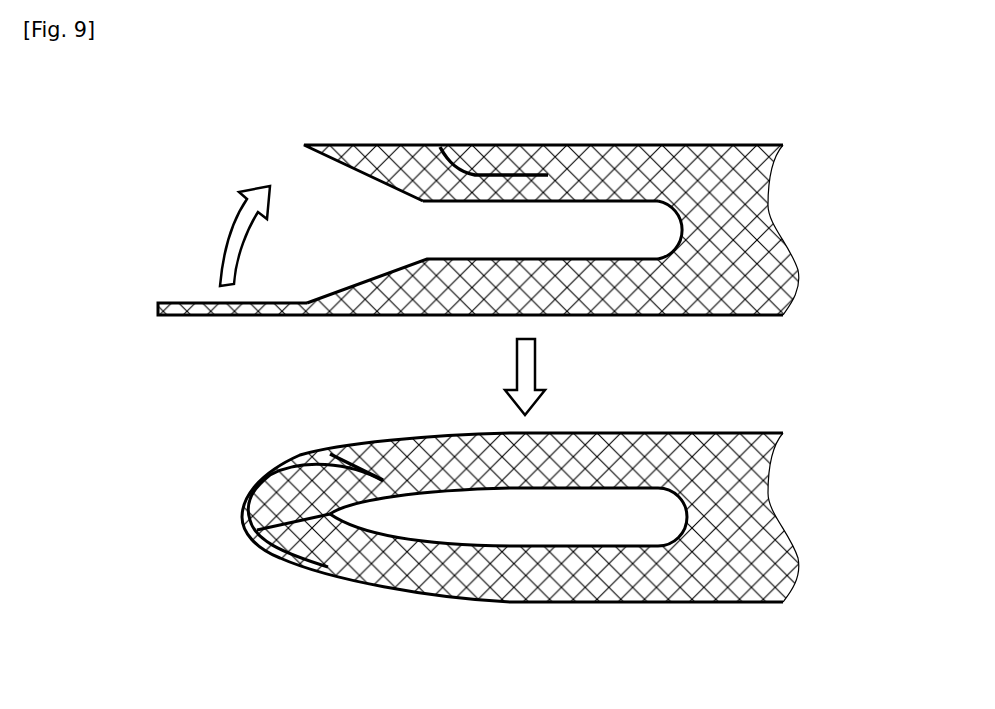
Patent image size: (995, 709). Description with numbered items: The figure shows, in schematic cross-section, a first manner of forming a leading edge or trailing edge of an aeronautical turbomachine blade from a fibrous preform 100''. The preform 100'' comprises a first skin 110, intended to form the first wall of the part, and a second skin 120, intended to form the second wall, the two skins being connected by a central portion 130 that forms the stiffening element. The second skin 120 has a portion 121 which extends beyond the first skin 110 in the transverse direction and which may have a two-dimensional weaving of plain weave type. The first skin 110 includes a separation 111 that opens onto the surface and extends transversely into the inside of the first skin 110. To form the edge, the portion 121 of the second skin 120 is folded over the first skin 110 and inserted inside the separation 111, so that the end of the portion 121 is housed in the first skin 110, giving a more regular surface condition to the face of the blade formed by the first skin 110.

The fibrous preform 100'' is at (478, 370).
The first skin 110 is at (603, 177).
The separation 111 is at (487, 165).
The second skin 120 is at (434, 294).
The portion 121 is at (230, 308).
The central portion 130 is at (720, 242).